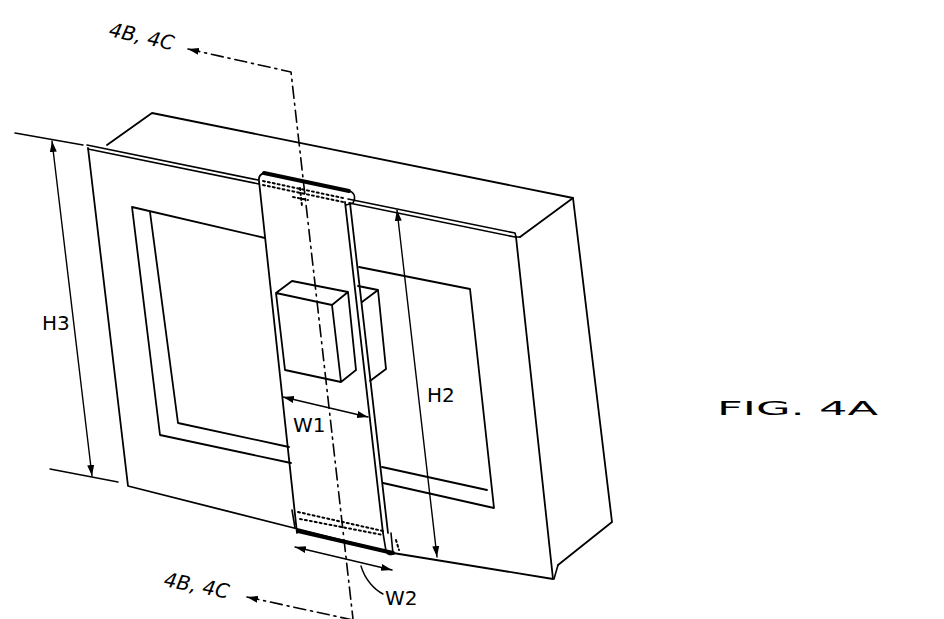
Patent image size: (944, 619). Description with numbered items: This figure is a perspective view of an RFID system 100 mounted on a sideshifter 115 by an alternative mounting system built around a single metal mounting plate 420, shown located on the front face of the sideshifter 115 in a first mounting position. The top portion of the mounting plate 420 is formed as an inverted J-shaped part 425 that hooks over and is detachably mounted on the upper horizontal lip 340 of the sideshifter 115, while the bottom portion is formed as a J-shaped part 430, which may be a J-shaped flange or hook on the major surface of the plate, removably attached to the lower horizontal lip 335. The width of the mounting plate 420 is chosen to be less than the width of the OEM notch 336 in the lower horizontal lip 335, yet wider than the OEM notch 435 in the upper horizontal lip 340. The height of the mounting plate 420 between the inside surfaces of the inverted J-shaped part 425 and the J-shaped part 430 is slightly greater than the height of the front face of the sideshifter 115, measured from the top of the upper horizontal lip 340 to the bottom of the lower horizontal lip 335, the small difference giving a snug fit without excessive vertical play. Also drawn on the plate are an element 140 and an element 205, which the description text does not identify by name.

The RFID system 100 is at (232, 328).
The sideshifter 115 is at (605, 425).
The component block 140 is at (330, 337).
The component block 205 is at (387, 350).
The lower horizontal lip 335 is at (555, 578).
The OEM notch 336 is at (394, 526).
The upper horizontal lip 340 is at (518, 236).
The mounting plate 420 is at (303, 260).
The inverted J-shaped part 425 is at (334, 183).
The J-shaped part 430 is at (324, 543).
The OEM notch 435 is at (288, 201).